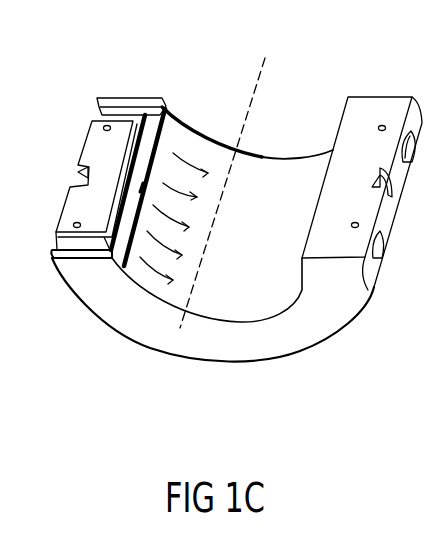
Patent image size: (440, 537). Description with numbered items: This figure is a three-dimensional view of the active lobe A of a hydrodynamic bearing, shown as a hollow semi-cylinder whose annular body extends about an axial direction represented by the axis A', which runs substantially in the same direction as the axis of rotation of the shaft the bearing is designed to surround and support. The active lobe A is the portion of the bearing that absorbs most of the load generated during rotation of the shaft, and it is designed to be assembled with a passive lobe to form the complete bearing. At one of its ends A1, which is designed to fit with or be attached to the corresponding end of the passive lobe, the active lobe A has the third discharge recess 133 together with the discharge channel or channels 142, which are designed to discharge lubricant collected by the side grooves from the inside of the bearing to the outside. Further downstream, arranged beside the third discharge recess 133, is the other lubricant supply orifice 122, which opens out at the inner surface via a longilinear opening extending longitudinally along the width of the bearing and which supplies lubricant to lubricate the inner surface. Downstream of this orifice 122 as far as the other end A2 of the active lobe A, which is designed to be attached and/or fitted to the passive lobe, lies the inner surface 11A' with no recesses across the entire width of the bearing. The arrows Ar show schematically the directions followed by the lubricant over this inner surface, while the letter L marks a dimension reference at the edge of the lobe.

The discharge channel 142 is at (128, 115).
The other lubricant supply orifice 122 is at (140, 190).
The third discharge recess 133 is at (112, 258).
The inner surface with no recesses 11A' is at (213, 234).
The lubricant direction arrows Ar is at (140, 258).
The active lobe A is at (40, 159).
The axis A' is at (232, 193).
The end of active lobe A1 is at (96, 185).
The other end of active lobe A2 is at (362, 193).
The length direction L is at (435, 175).